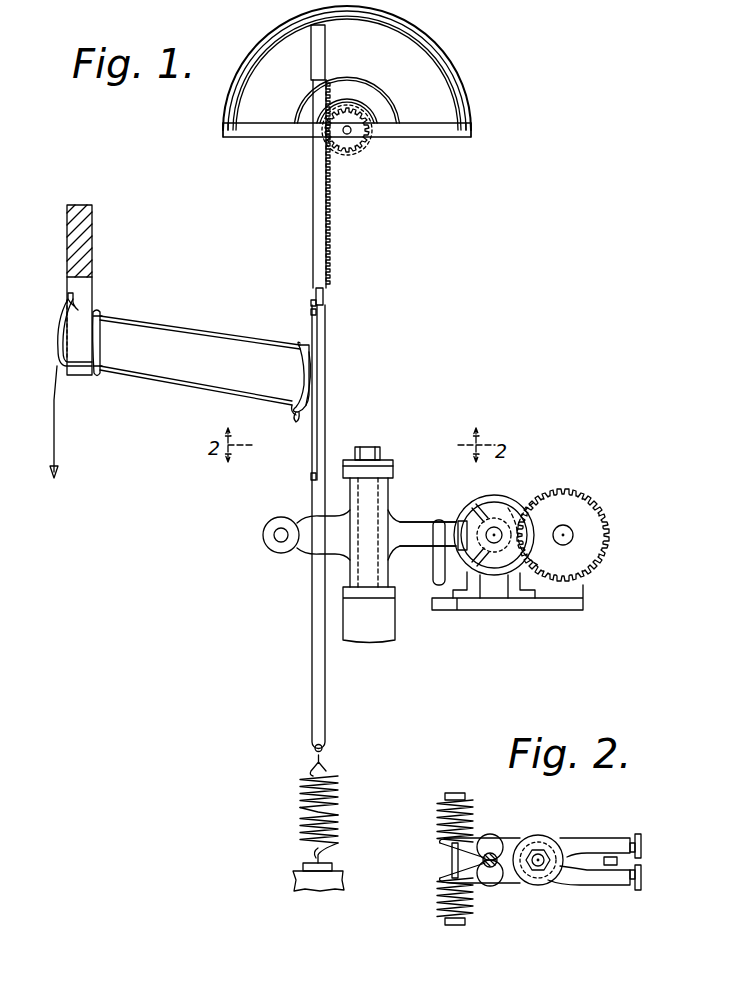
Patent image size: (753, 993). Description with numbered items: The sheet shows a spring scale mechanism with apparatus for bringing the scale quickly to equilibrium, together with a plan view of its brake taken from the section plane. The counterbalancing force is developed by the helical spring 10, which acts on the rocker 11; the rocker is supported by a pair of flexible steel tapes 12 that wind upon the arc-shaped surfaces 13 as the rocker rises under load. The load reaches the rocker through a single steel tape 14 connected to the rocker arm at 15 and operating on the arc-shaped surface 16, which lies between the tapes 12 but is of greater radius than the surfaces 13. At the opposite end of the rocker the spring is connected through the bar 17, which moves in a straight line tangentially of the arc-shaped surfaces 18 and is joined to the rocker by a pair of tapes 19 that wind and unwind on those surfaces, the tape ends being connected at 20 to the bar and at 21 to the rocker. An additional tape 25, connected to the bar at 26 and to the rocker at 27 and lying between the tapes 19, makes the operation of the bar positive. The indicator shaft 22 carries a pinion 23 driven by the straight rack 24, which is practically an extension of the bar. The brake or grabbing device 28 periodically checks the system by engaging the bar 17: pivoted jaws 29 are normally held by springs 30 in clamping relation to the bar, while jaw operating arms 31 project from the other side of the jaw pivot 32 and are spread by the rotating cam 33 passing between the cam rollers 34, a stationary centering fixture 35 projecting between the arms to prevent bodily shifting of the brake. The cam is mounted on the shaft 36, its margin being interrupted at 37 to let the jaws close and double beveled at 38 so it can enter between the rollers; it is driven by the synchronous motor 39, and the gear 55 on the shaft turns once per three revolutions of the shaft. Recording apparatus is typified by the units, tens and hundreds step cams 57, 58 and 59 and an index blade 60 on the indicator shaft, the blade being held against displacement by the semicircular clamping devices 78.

In FIG. 1, the spring 10 is at (340, 789).
In FIG. 1, the rocker 11 is at (207, 385).
In FIG. 1, the flexible steel tapes 12 is at (93, 282).
In FIG. 1, the arc-shaped surfaces 13 is at (101, 320).
In FIG. 1, the steel tape 14 is at (50, 432).
In FIG. 1, the connection point 15 is at (66, 296).
In FIG. 1, the arc-shaped surface 16 is at (57, 330).
In FIG. 1, the bar 17 is at (311, 626).
In FIG. 2, the bar 17 is at (482, 860).
In FIG. 1, the arc-shaped surfaces 18 is at (310, 400).
In FIG. 1, the tapes 19 is at (320, 429).
In FIG. 1, the tape connection to bar 20 is at (312, 478).
In FIG. 1, the tape connection to rocker 21 is at (304, 344).
In FIG. 1, the indicator shaft 22 is at (350, 134).
In FIG. 1, the pinion 23 is at (371, 113).
In FIG. 1, the straight rack 24 is at (323, 150).
In FIG. 1, the tape 25 is at (312, 312).
In FIG. 1, the tape connection to bar 26 is at (312, 302).
In FIG. 1, the tape connection to rocker 27 is at (300, 422).
In FIG. 1, the brake or grabbing device 28 is at (389, 505).
In FIG. 2, the pivoted jaws 29 is at (505, 880).
In FIG. 2, the springs 30 is at (470, 915).
In FIG. 1, the jaw operating arms 31 is at (460, 522).
In FIG. 2, the jaw operating arms 31 is at (590, 885).
In FIG. 1, the jaw pivot 32 is at (372, 460).
In FIG. 2, the jaw pivot 32 is at (545, 852).
In FIG. 1, the rotating cam 33 is at (500, 518).
In FIG. 2, the cam rollers 34 is at (642, 876).
In FIG. 1, the stationary centering fixture 35 is at (436, 585).
In FIG. 2, the stationary centering fixture 35 is at (613, 857).
In FIG. 1, the cam shaft 36 is at (497, 576).
In FIG. 1, the interrupted portion of cam margin 37 is at (470, 590).
In FIG. 1, the double beveled leading portion 38 is at (484, 508).
In FIG. 1, the synchronous motor 39 is at (507, 506).
In FIG. 1, the gear 55 is at (610, 532).
In FIG. 1, the units step cam 57 is at (340, 20).
In FIG. 1, the tens step cam 58 is at (352, 79).
In FIG. 1, the hundreds step cam 59 is at (366, 101).
In FIG. 1, the index blade 60 is at (428, 137).
In FIG. 1, the semicircular clamping devices 78 is at (438, 28).